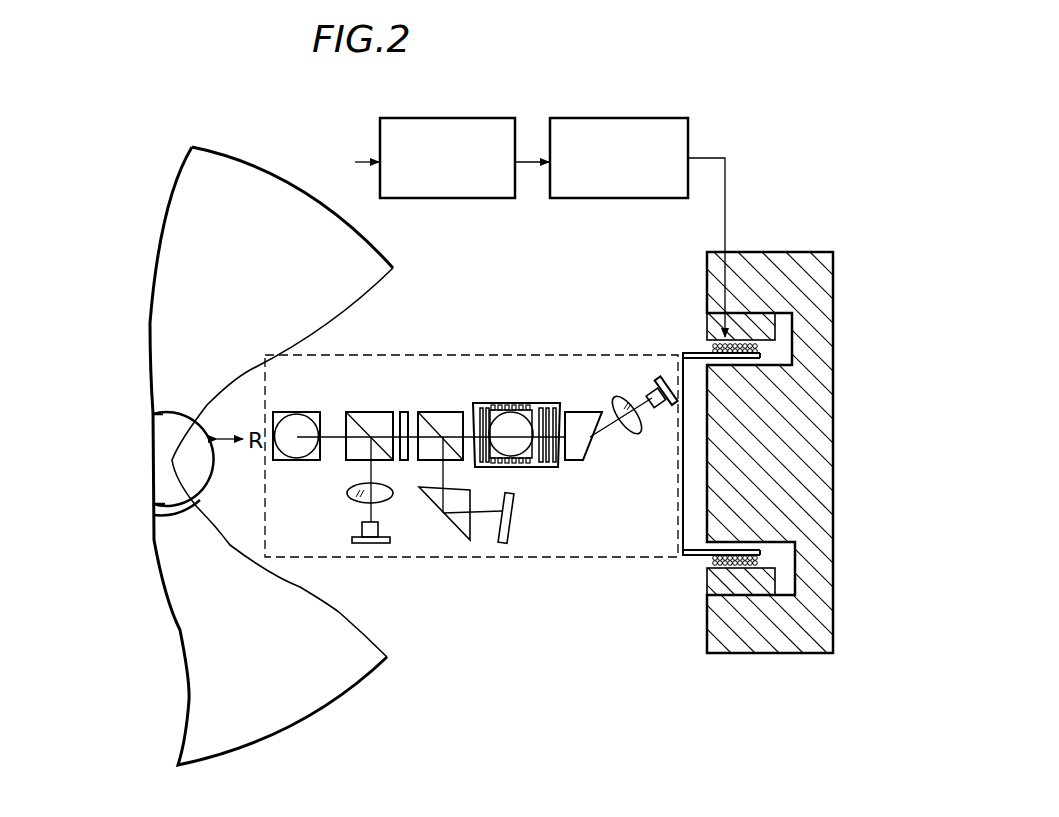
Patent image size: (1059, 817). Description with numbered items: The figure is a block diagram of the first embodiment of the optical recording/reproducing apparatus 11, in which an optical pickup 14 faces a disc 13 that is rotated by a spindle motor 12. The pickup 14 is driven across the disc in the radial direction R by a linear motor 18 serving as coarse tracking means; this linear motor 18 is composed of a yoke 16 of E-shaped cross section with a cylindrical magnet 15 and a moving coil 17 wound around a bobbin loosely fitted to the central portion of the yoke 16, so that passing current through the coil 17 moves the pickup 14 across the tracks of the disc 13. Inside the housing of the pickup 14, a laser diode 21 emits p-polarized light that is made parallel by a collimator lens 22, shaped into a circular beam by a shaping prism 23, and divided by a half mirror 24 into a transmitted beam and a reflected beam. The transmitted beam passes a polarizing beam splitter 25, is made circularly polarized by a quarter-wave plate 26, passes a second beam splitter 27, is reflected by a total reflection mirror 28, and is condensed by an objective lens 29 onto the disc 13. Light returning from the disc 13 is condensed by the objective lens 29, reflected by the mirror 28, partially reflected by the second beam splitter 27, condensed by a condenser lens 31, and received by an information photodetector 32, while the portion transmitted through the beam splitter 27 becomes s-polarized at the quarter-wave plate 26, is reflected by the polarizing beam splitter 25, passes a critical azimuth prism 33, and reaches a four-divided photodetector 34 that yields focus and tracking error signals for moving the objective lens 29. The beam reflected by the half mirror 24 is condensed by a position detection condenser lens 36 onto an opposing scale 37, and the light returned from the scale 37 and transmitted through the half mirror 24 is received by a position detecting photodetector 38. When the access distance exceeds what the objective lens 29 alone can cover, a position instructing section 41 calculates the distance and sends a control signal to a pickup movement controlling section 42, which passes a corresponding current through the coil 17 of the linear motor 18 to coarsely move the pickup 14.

The optical recording/reproducing apparatus 11 is at (486, 101).
The spindle motor 12 is at (197, 488).
The disc 13 is at (271, 456).
The optical pickup 14 is at (548, 557).
The magnet 15 is at (748, 327).
The yoke 16 is at (741, 252).
The coil 17 is at (723, 563).
The linear motor 18 is at (740, 654).
The laser diode 21 is at (660, 410).
The collimator lens 22 is at (622, 400).
The shaping prism 23 is at (575, 461).
The half mirror 24 is at (495, 412).
The polarizing beam splitter 25 is at (477, 412).
The λ/4 plate 26 is at (442, 420).
The second beam splitter 27 is at (367, 418).
The total reflection mirror 28 is at (275, 412).
The objective lens 29 is at (296, 428).
The condenser lens 31 is at (343, 497).
The information photodetector 32 is at (376, 528).
The critical azimuth prism 33 is at (460, 522).
The photodetector 34 is at (510, 537).
The position detection condenser lens 36 is at (520, 447).
The scale 37 is at (402, 412).
The position detecting photodetector 38 is at (317, 157).
The position instructing section 41 is at (432, 118).
The pickup movement controlling section 42 is at (688, 118).